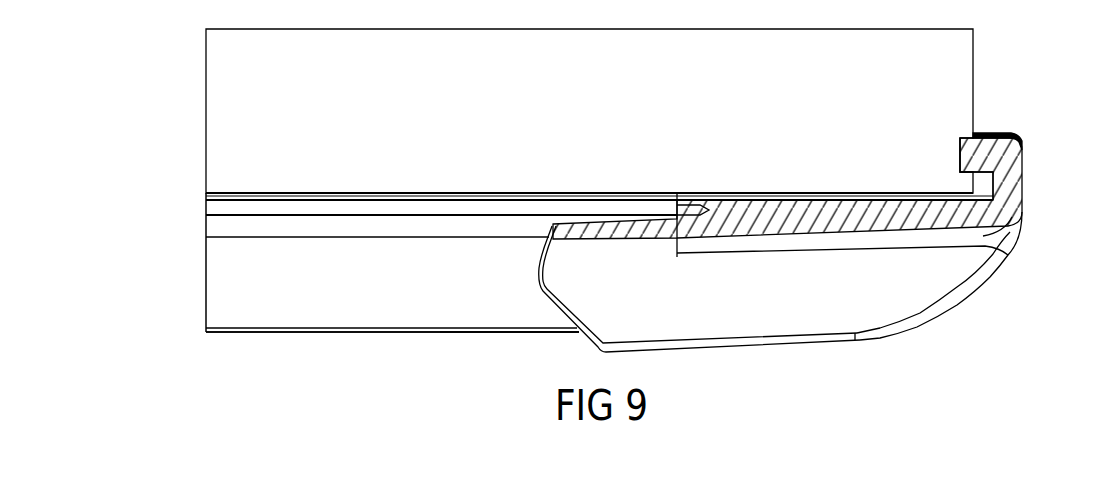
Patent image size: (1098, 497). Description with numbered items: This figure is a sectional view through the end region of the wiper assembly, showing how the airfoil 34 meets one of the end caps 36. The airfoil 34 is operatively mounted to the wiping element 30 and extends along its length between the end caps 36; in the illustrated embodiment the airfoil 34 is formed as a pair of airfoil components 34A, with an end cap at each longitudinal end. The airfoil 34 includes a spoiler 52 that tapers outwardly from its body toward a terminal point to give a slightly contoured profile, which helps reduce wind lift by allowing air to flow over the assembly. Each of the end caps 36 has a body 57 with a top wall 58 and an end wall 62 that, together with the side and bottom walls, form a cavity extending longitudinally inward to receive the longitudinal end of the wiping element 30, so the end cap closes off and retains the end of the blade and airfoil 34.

The wiping element 30 is at (978, 70).
The end wall 62 is at (1009, 188).
The body 57 is at (1020, 218).
The end caps 36 is at (1006, 283).
The top wall 58 is at (872, 242).
The spoiler 52 is at (220, 301).
The airfoil 34 is at (379, 336).
The airfoil components 34A is at (487, 333).